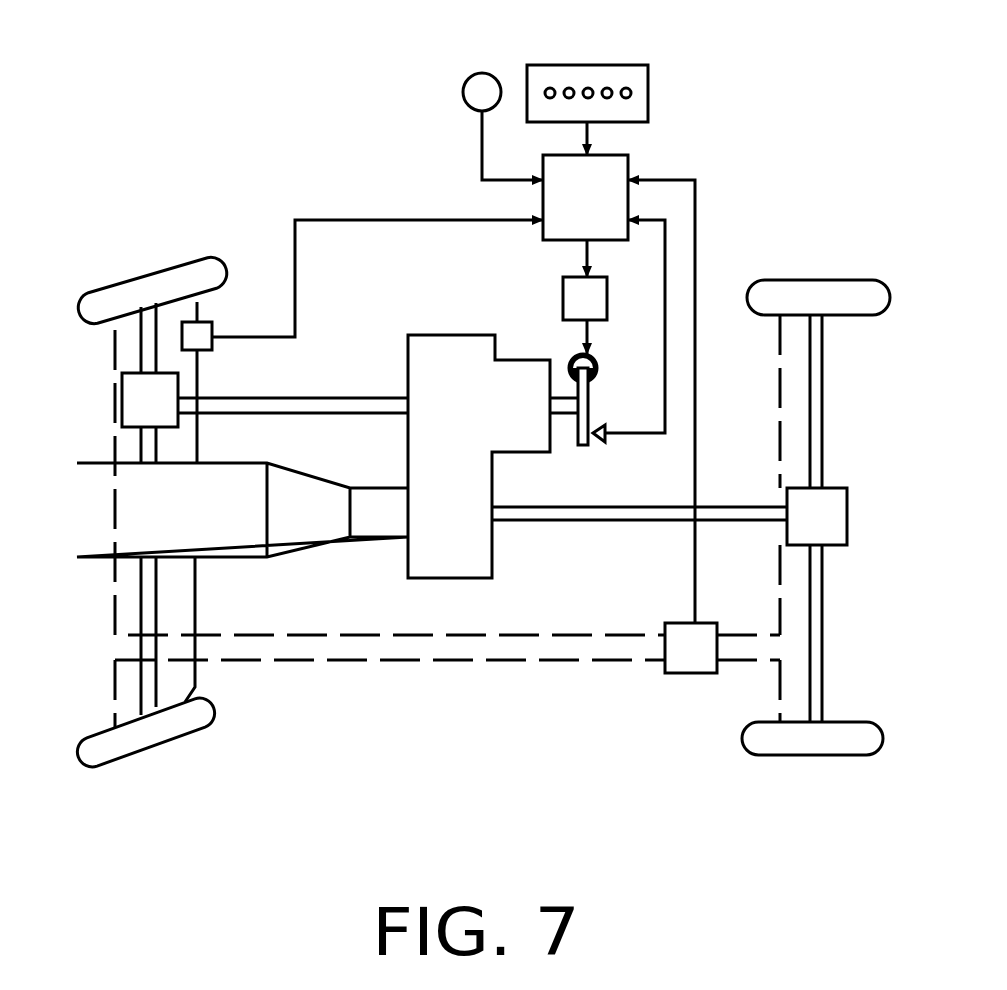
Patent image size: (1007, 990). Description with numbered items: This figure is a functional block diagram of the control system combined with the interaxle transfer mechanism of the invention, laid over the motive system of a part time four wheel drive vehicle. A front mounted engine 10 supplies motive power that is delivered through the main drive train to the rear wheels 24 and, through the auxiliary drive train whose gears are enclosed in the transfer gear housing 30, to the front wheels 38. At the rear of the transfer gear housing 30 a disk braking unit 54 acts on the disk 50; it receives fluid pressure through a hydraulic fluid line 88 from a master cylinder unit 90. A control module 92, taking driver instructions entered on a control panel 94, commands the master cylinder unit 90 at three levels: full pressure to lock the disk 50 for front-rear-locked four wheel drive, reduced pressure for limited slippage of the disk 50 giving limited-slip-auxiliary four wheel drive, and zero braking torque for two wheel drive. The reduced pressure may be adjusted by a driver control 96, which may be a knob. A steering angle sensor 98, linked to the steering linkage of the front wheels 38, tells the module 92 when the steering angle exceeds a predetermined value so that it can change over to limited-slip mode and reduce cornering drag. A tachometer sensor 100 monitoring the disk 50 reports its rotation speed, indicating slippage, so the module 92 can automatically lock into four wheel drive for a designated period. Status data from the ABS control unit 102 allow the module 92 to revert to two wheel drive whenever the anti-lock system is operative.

The engine 10 is at (97, 462).
The front wheels 38 is at (185, 262).
The rear wheels 24 is at (860, 280).
The transfer gear housing 30 is at (458, 335).
The disk 50 is at (590, 385).
The disk braking unit 54 is at (560, 346).
The hydraulic fluid line 88 is at (588, 327).
The master cylinder unit 90 is at (563, 290).
The control module 92 is at (630, 165).
The control panel 94 is at (650, 92).
The driver control 96 is at (463, 92).
The steering angle sensor 98 is at (213, 328).
The tachometer sensor 100 is at (598, 443).
The ABS control unit 102 is at (690, 673).